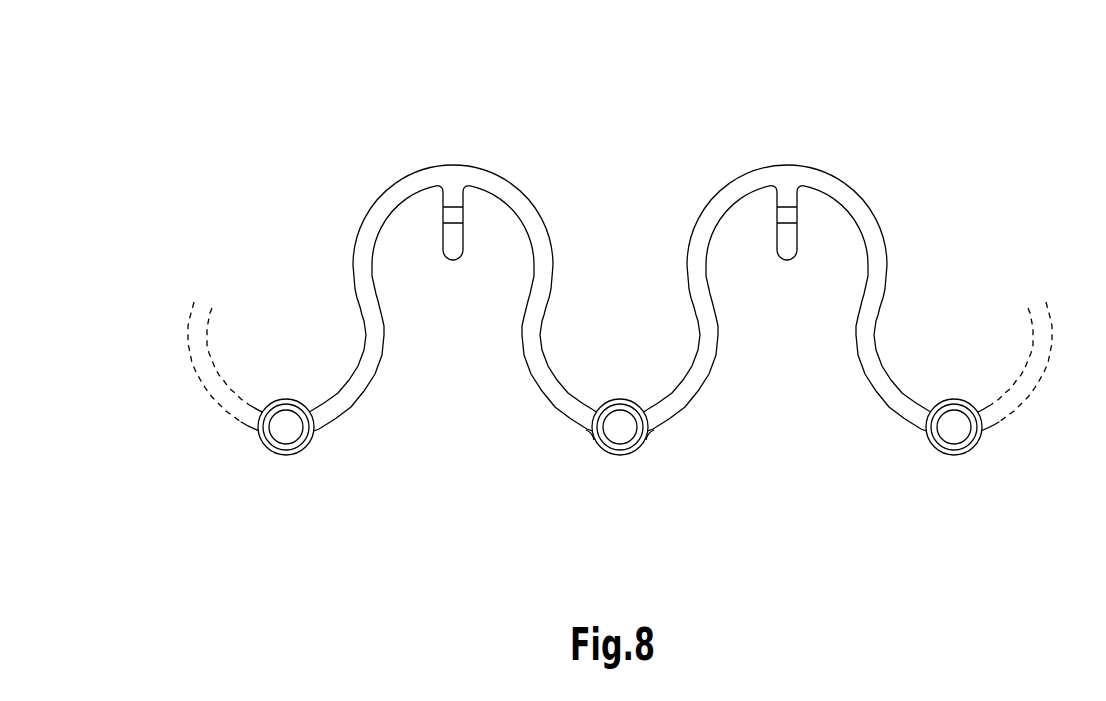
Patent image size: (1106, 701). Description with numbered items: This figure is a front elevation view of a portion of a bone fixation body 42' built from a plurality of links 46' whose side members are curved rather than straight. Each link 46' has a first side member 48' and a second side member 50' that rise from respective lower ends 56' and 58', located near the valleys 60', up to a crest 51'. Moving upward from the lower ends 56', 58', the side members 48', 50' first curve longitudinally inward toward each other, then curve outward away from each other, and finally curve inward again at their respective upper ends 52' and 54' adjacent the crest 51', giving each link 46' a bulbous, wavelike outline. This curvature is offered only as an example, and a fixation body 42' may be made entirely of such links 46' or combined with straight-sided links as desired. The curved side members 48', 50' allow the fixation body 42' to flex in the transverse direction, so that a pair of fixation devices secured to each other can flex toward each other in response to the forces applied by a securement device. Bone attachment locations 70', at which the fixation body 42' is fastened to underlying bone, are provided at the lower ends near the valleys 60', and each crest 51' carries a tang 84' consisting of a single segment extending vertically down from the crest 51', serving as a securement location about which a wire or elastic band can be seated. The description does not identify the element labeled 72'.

The fixation body 42' is at (613, 306).
The link 46' is at (619, 262).
The side member 48' is at (473, 268).
The side member 50' is at (766, 275).
The crest 51' is at (652, 111).
The upper end 52' is at (505, 192).
The upper end 54' is at (712, 189).
The lower end 56' is at (527, 417).
The lower end 58' is at (713, 400).
The valley 60' is at (604, 493).
The bone attachment location 70' is at (525, 491).
The second fillet junction 72' is at (692, 488).
The tang 84' is at (632, 267).